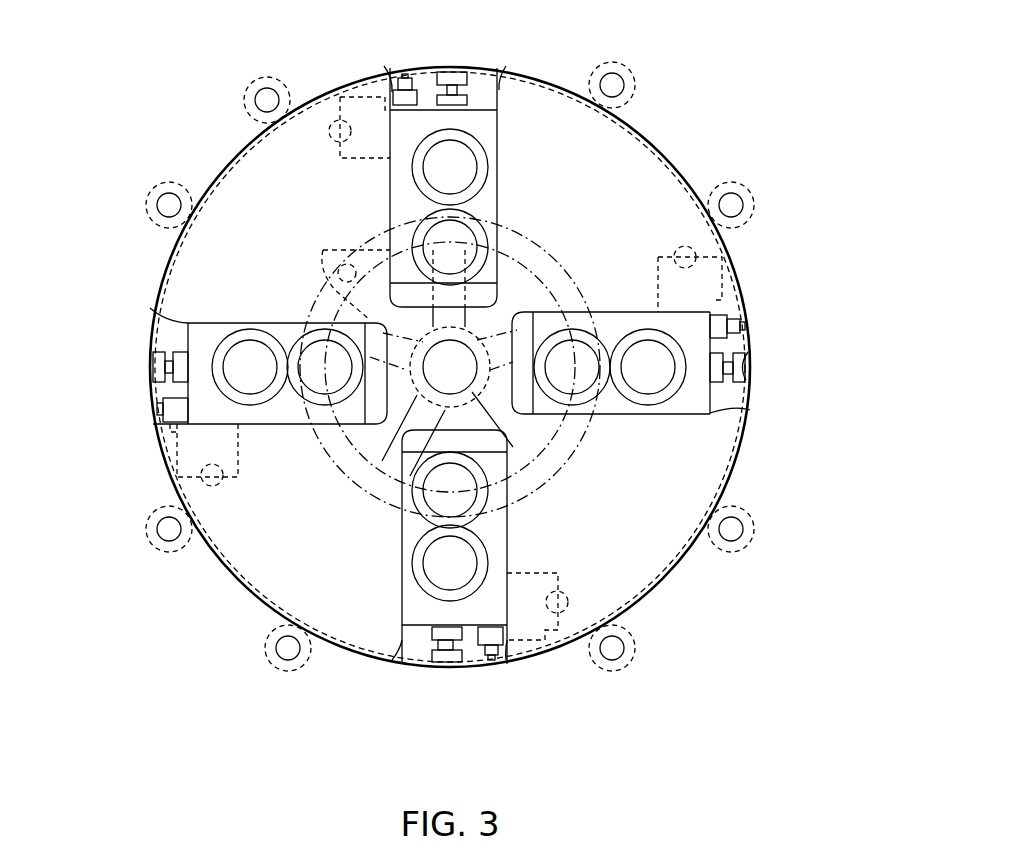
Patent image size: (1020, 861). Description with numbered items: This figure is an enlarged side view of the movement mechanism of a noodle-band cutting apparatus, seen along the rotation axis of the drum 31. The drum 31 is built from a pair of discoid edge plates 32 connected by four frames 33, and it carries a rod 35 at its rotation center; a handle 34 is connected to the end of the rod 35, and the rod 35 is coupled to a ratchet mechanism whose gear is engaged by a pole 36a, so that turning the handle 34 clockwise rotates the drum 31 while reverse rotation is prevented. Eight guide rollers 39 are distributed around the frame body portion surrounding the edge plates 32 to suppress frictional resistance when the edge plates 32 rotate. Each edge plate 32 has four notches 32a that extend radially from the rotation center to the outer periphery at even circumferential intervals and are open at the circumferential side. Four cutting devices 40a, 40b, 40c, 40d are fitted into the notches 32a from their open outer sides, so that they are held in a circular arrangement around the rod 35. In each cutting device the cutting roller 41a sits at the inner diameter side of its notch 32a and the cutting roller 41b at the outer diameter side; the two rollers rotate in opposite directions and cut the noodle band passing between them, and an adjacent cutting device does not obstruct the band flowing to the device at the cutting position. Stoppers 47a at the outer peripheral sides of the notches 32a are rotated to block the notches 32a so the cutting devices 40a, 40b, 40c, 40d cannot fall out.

The drum 31 is at (672, 151).
The edge plate 32 is at (697, 484).
The notch 32a is at (490, 82).
The frame 33 is at (335, 120).
The handle 34 is at (578, 262).
The rod 35 is at (480, 405).
The pole 36a is at (345, 238).
The guide roller 39 is at (248, 92).
The cutting device 40a is at (283, 398).
The cutting device 40b is at (488, 536).
The cutting device 40c is at (611, 330).
The cutting device 40d is at (416, 198).
The cutting roller 41a is at (488, 240).
The cutting roller 41b is at (486, 158).
The stopper 47a is at (430, 90).